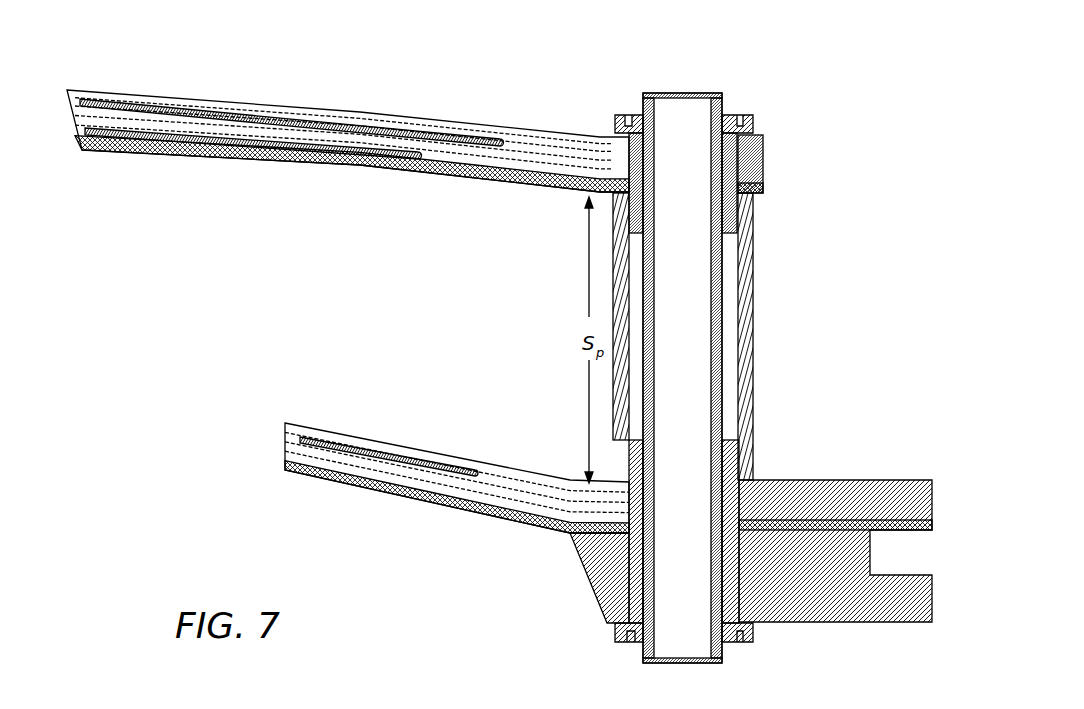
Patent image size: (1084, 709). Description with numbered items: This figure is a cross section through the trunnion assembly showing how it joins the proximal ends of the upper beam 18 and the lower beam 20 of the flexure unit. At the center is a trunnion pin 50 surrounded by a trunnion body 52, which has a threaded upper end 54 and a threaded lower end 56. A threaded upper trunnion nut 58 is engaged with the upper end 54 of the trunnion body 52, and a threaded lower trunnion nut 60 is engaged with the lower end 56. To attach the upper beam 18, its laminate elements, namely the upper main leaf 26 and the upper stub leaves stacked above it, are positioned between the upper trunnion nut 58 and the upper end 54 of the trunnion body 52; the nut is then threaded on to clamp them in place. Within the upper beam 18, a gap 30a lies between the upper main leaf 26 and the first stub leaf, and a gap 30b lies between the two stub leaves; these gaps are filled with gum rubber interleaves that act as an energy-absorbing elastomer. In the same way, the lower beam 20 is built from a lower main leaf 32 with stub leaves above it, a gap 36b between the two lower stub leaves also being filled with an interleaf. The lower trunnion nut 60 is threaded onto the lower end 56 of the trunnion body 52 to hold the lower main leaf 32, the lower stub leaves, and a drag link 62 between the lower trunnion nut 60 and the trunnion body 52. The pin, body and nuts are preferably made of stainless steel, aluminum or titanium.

The upper beam 18 is at (348, 127).
The lower beam 20 is at (457, 464).
The upper main leaf 26 is at (242, 158).
The gap 30a is at (118, 140).
The gap 30b is at (170, 104).
The lower main leaf 32 is at (465, 504).
The gap 36b is at (424, 466).
The trunnion pin 50 is at (720, 283).
The trunnion body 52 is at (747, 338).
The threaded upper end 54 is at (755, 222).
The threaded lower end 56 is at (745, 445).
The upper trunnion nut 58 is at (745, 115).
The lower trunnion nut 60 is at (745, 644).
The drag link 62 is at (900, 620).